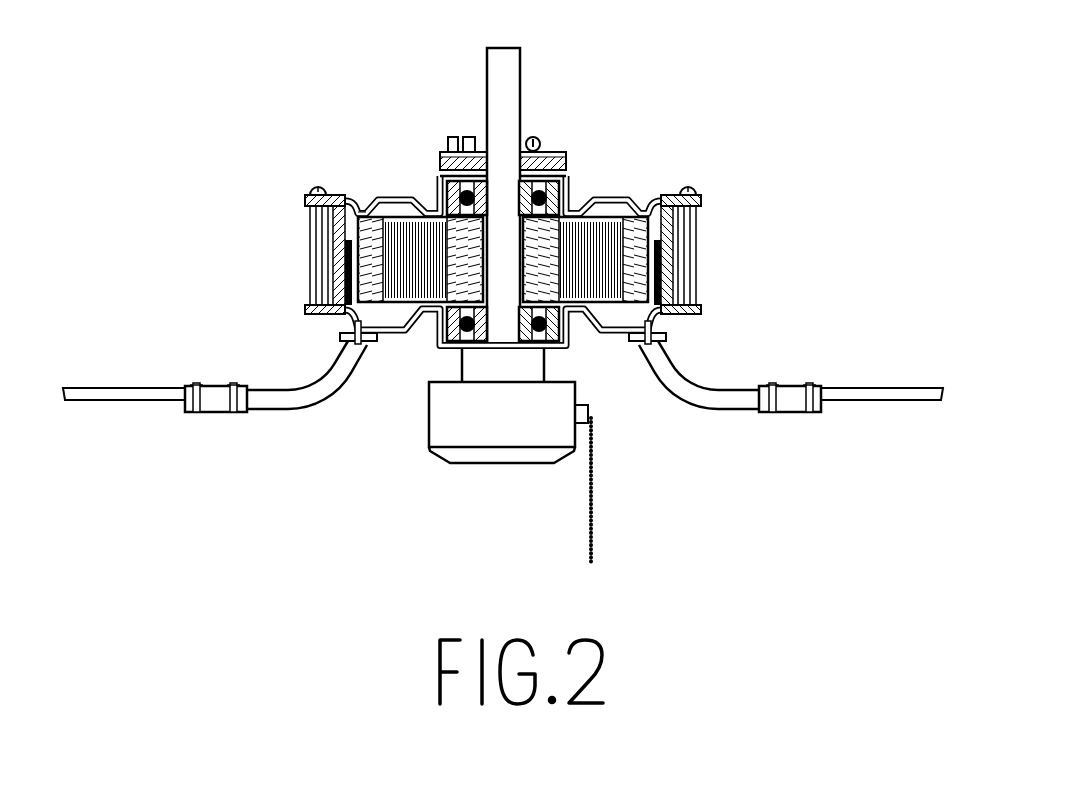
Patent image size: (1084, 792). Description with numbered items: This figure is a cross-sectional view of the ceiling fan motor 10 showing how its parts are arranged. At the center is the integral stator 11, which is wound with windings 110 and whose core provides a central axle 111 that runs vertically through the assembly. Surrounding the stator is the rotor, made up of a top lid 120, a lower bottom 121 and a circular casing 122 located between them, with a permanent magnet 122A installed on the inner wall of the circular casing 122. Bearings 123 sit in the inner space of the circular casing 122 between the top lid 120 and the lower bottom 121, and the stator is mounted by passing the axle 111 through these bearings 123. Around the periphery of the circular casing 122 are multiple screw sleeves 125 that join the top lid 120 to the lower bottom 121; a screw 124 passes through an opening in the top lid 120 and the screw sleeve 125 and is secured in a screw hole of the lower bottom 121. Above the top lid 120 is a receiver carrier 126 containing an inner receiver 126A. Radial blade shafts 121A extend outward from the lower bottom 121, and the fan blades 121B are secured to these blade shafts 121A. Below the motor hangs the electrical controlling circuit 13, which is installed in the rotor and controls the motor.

The ceiling fan motor assembly 10 is at (750, 230).
The integral stator 11 is at (665, 330).
The electrical controlling circuit 13 is at (463, 420).
The windings 110 is at (338, 318).
The central axle 111 is at (507, 138).
The top lid 120 is at (326, 190).
The lower bottom 121 is at (340, 323).
The radial blade shafts 121A is at (730, 402).
The blades 121B is at (865, 398).
The circular casing 122 is at (340, 232).
The permanent magnet 122A is at (353, 196).
The bearings 123 is at (560, 182).
The screw 124 is at (692, 188).
The screw sleeves 125 is at (693, 287).
The receiver carrier 126 is at (440, 158).
The inner receiver 126A is at (472, 150).